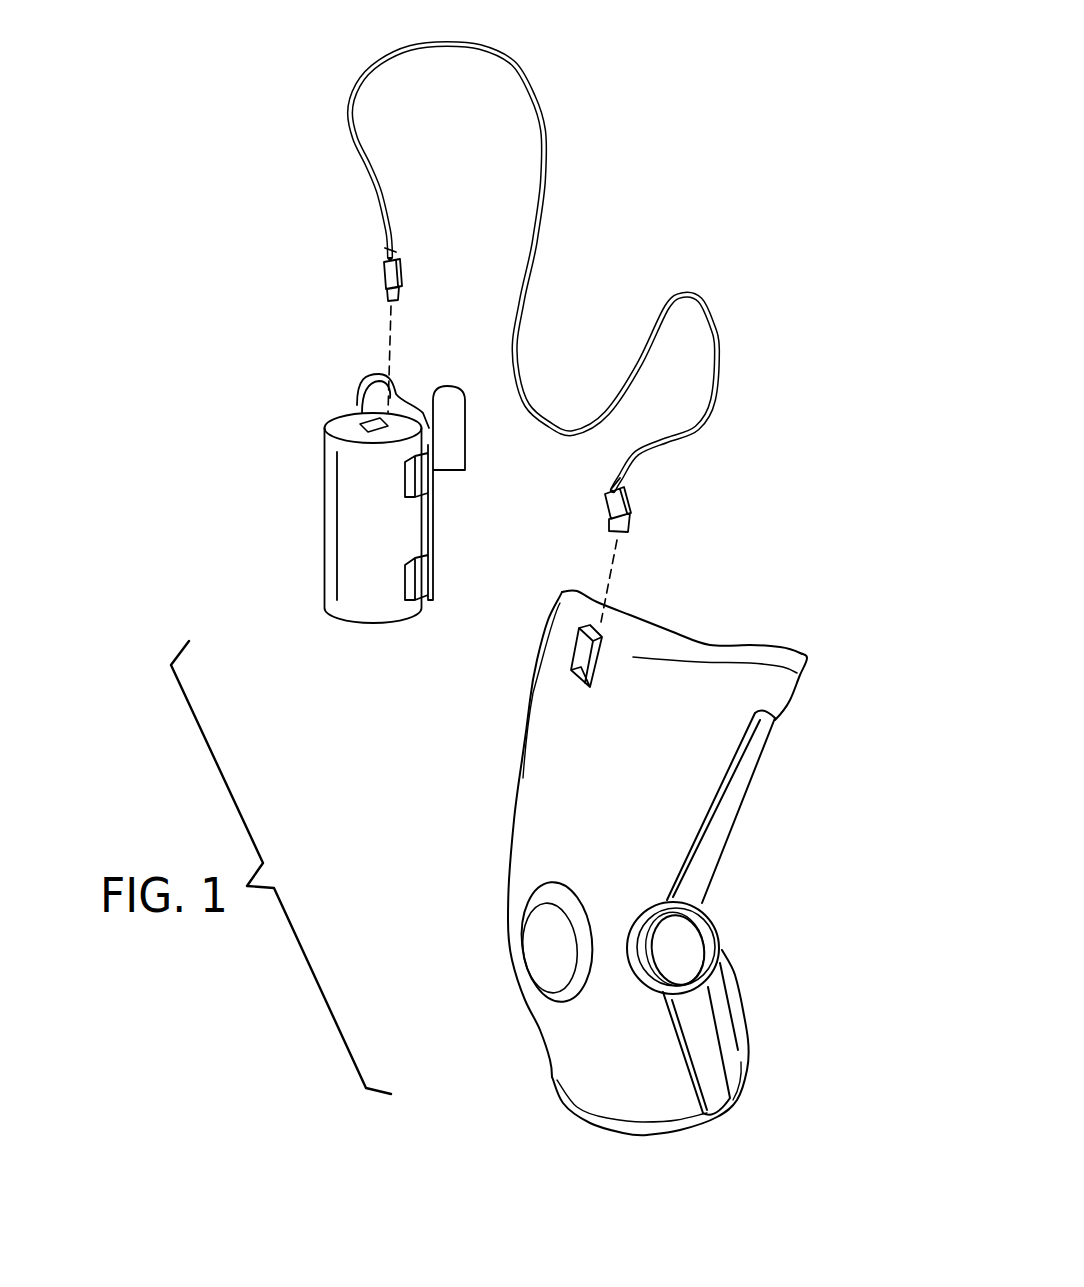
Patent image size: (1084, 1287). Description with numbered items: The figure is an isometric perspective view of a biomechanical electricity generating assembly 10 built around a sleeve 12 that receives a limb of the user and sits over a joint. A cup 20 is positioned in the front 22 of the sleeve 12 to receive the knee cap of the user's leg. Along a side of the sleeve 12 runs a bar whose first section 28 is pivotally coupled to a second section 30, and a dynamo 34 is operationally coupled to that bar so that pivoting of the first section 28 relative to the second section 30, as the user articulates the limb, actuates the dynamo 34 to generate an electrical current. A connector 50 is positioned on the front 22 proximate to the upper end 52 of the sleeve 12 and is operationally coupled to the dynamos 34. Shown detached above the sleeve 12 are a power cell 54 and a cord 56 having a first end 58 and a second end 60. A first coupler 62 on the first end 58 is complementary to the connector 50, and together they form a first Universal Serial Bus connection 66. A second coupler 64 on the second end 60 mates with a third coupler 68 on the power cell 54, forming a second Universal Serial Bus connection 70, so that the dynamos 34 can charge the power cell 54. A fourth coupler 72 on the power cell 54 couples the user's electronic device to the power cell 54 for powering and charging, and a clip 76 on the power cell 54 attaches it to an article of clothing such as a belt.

The biomechanical electricity generating assembly 10 is at (250, 362).
The sleeve 12 is at (822, 655).
The cup 20 is at (533, 937).
The front 22 is at (546, 749).
The first section 28 is at (740, 797).
The second section 30 is at (703, 1050).
The dynamo 34 is at (683, 952).
The connector 50 is at (585, 621).
The upper end 52 is at (681, 633).
The power cell 54 is at (325, 502).
The cord 56 is at (541, 113).
The first end 58 is at (623, 481).
The second end 60 is at (397, 252).
The first coupler 62 is at (632, 512).
The second coupler 64 is at (385, 273).
The first Universal Serial Bus connection 66 is at (585, 622).
The third coupler 68 is at (368, 409).
The second Universal Serial Bus connection 70 is at (398, 295).
The fourth coupler 72 is at (331, 422).
The clip 76 is at (455, 445).